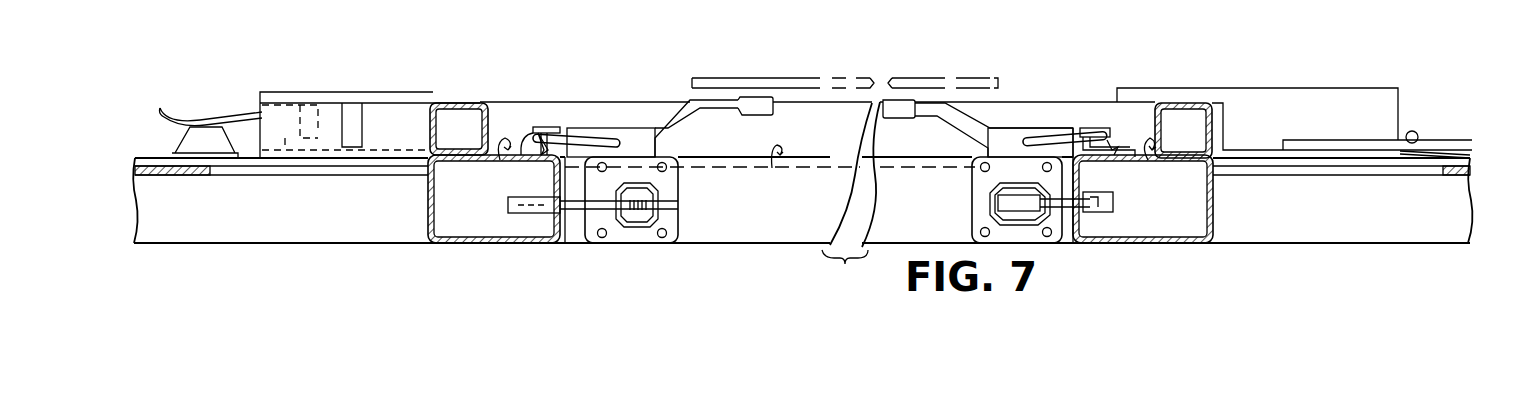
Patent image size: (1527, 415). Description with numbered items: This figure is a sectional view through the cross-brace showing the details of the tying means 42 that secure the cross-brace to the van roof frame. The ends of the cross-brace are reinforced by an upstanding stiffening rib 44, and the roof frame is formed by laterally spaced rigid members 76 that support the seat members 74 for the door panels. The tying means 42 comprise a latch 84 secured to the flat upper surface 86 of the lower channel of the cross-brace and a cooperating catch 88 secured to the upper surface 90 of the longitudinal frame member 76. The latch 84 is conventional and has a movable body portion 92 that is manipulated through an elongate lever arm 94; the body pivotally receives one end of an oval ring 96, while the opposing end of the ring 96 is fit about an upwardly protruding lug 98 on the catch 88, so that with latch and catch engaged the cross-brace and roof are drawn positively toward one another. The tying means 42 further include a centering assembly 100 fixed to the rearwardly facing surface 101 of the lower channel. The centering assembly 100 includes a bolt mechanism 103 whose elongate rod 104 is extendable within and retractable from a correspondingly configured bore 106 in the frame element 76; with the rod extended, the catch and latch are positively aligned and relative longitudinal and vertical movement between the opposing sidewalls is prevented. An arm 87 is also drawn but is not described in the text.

The tying means 42 is at (698, 72).
The upstanding stiffening rib 44 is at (355, 100).
The seat member 74 is at (498, 102).
The rigid member 76 is at (480, 245).
The latch 84 is at (621, 126).
The flat upper surface 86 is at (773, 166).
The arm 87 is at (1012, 118).
The catch 88 is at (545, 150).
The upper surface 90 is at (504, 145).
The movable body portion 92 is at (642, 142).
The elongate lever arm 94 is at (735, 105).
The oval ring 96 is at (572, 132).
The upwardly protruding lug 98 is at (548, 138).
The centering assembly 100 is at (660, 247).
The rearwardly facing surface 101 is at (815, 210).
The bolt mechanism 103 is at (660, 188).
The elongate rod 104 is at (575, 210).
The bore 106 is at (1108, 192).